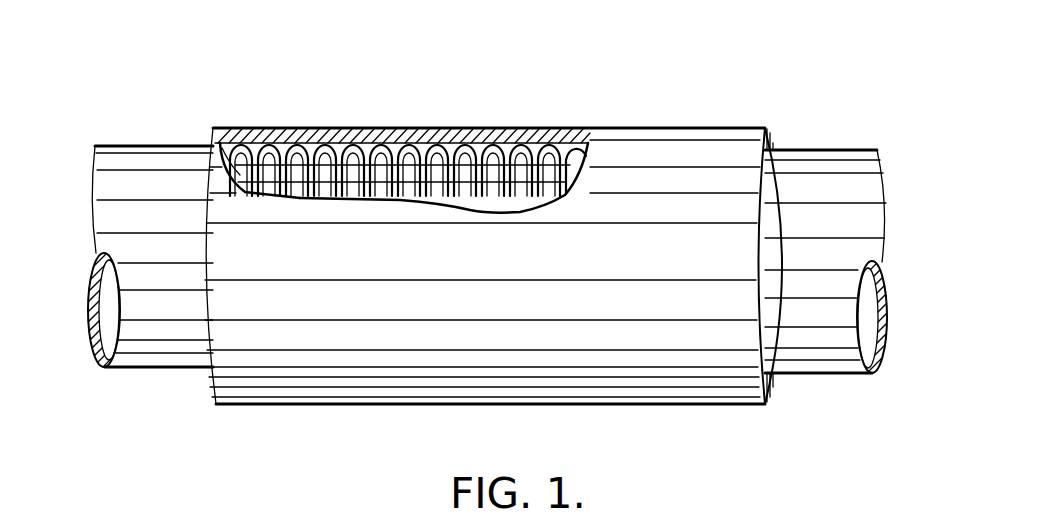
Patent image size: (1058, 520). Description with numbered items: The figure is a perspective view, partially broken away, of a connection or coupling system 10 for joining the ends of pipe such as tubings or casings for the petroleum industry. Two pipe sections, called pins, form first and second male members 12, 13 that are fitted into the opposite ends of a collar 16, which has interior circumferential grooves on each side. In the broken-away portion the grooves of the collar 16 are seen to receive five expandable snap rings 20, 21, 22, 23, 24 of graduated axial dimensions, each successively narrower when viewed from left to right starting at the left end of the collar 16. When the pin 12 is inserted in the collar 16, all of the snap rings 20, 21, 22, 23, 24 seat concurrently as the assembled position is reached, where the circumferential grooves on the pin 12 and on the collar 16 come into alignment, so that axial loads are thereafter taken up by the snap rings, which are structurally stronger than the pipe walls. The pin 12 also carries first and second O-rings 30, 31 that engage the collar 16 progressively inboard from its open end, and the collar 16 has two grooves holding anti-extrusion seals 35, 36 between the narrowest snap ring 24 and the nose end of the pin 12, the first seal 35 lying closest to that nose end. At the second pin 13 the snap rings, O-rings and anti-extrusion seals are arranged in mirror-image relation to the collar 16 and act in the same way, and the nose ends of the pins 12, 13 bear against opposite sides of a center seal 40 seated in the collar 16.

The connection or coupling system 10 is at (529, 61).
The first male member 12 is at (157, 165).
The second male member 13 is at (855, 150).
The collar 16 is at (703, 133).
The snap ring 20 is at (288, 132).
The snap ring 21 is at (322, 132).
The snap ring 22 is at (352, 132).
The snap ring 23 is at (381, 132).
The snap ring 24 is at (410, 136).
The first O-ring 30 is at (243, 130).
The second O-ring 31 is at (268, 136).
The first anti-extrusion seal 35 is at (466, 134).
The second anti-extrusion seal 36 is at (442, 136).
The center seal 40 is at (510, 128).